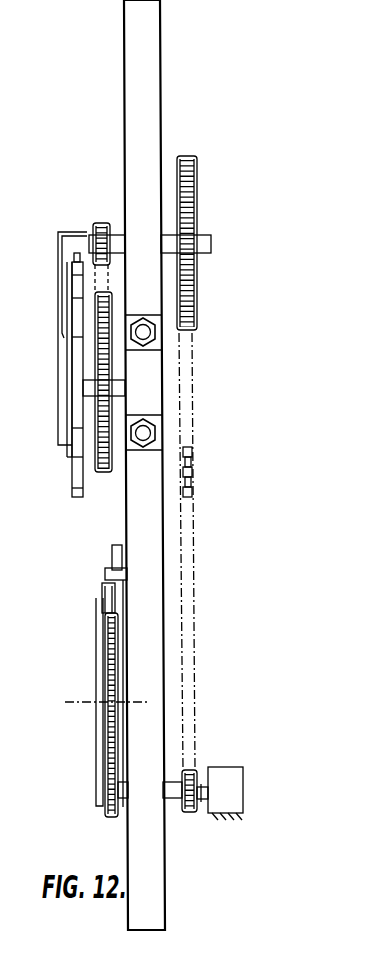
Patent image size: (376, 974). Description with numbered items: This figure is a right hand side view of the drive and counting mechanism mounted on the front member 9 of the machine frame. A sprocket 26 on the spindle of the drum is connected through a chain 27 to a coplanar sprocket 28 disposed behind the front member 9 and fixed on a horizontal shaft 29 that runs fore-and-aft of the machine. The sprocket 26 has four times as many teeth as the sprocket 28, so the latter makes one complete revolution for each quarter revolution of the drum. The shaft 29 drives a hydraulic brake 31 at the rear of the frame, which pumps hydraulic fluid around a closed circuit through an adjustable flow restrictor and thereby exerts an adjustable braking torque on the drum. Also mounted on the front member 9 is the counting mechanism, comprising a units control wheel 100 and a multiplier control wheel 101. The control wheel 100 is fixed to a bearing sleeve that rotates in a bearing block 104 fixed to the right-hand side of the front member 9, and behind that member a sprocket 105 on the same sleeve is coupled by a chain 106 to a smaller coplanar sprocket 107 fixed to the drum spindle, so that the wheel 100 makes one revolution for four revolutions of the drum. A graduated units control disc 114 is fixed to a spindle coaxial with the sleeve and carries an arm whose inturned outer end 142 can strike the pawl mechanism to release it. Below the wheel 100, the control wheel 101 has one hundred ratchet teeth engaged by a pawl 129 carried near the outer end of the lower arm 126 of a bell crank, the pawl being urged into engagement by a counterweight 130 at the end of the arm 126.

The front member 9 is at (146, 120).
The sprocket 26 is at (191, 155).
The chain 27 is at (194, 482).
The sprocket 28 is at (194, 770).
The horizontal shaft 29 is at (206, 801).
The hydraulic brake 31 is at (230, 793).
The units control wheel 100 is at (78, 412).
The multiplier control wheel 101 is at (110, 793).
The bearing block 104 is at (148, 378).
The sprocket 105 is at (103, 473).
The chain 106 is at (100, 272).
The sprocket 107 is at (100, 223).
The units control disc 114 is at (63, 360).
The lower arm 126 is at (123, 572).
The pawl 129 is at (105, 584).
The counterweight 130 is at (115, 545).
The inturned outer end 142 is at (68, 231).